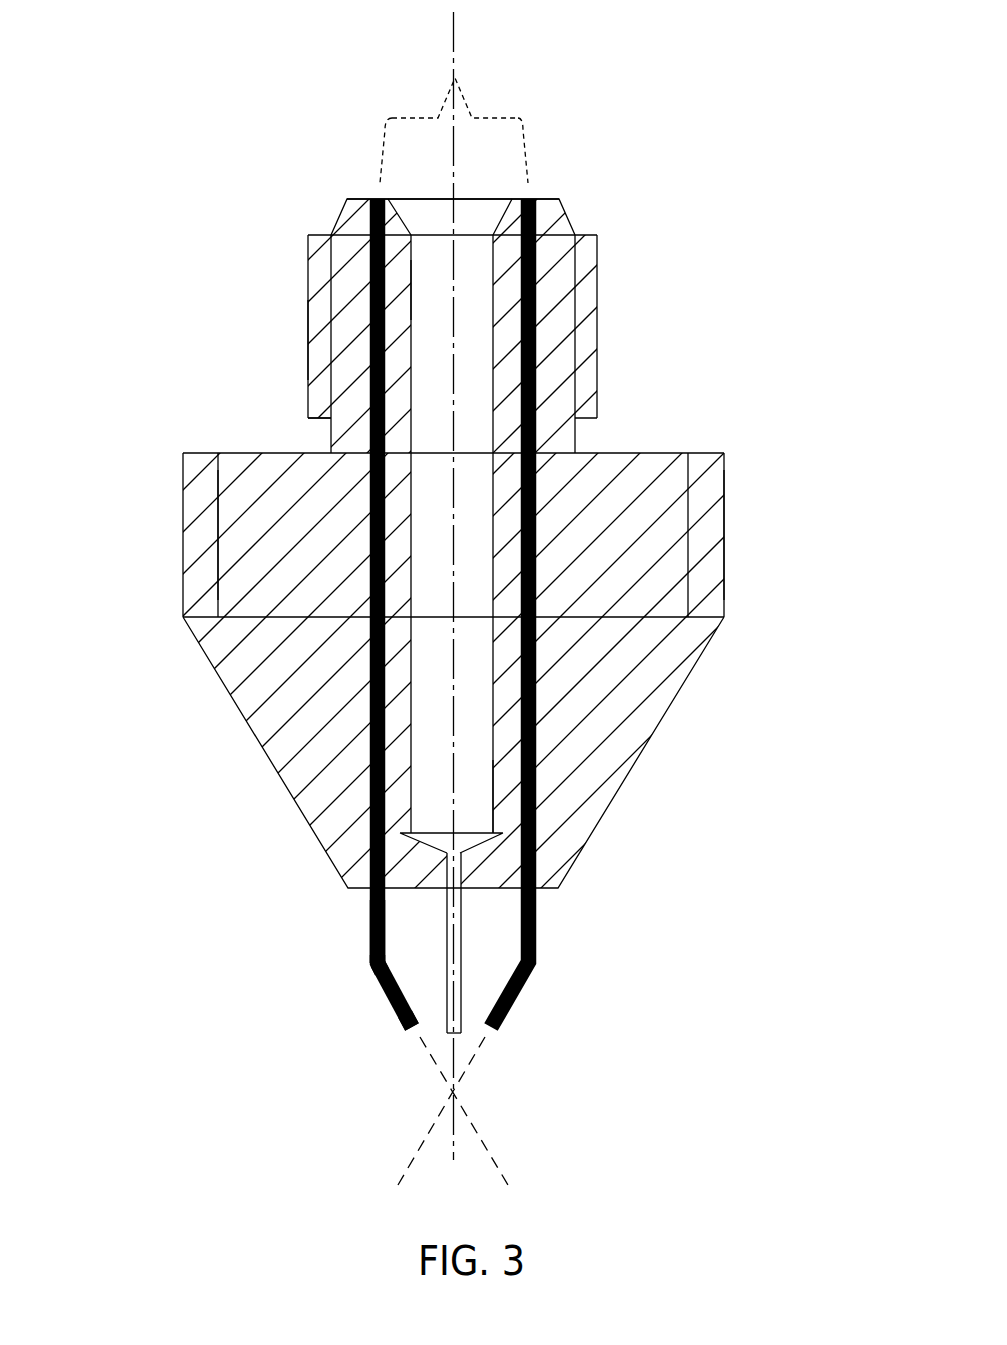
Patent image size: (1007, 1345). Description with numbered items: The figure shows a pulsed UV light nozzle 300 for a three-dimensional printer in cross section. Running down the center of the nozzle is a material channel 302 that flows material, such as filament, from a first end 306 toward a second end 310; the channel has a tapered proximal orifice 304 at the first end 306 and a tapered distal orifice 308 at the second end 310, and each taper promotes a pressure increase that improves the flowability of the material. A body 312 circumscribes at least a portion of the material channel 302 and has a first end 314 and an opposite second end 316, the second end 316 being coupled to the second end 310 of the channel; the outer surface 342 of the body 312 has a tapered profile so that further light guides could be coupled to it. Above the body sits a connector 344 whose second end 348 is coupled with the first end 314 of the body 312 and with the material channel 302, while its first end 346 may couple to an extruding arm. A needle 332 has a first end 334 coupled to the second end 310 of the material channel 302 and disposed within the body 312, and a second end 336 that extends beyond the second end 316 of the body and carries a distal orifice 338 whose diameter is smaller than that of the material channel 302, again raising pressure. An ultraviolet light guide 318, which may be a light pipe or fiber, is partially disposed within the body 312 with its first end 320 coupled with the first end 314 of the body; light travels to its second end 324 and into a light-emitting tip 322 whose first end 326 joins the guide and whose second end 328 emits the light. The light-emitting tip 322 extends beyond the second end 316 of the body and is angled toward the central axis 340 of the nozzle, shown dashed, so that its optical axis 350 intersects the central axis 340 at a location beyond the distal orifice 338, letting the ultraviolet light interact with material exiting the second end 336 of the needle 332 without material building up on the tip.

The UV light nozzle 300 is at (185, 68).
The material channel 302 is at (474, 372).
The proximal orifice 304 is at (433, 228).
The first end 306 is at (468, 198).
The distal orifice 308 is at (430, 828).
The second end 310 is at (477, 807).
The body 312 is at (644, 487).
The first end 314 is at (255, 502).
The second end 316 is at (345, 832).
The ultraviolet light guide 318 is at (537, 499).
The first end 320 is at (541, 200).
The light-emitting tip 322 is at (383, 1008).
The second end 324 is at (367, 935).
The first end 326 is at (372, 968).
The second end 328 is at (412, 1035).
The needle 332 is at (466, 957).
The first end 334 is at (457, 858).
The second end 336 is at (470, 1005).
The distal orifice 338 is at (455, 1042).
The central axis 340 is at (447, 290).
The outer surface 342 is at (728, 541).
The connector 344 is at (348, 353).
The first end 346 is at (320, 260).
The second end 348 is at (315, 402).
The optical axis 350 is at (408, 1165).